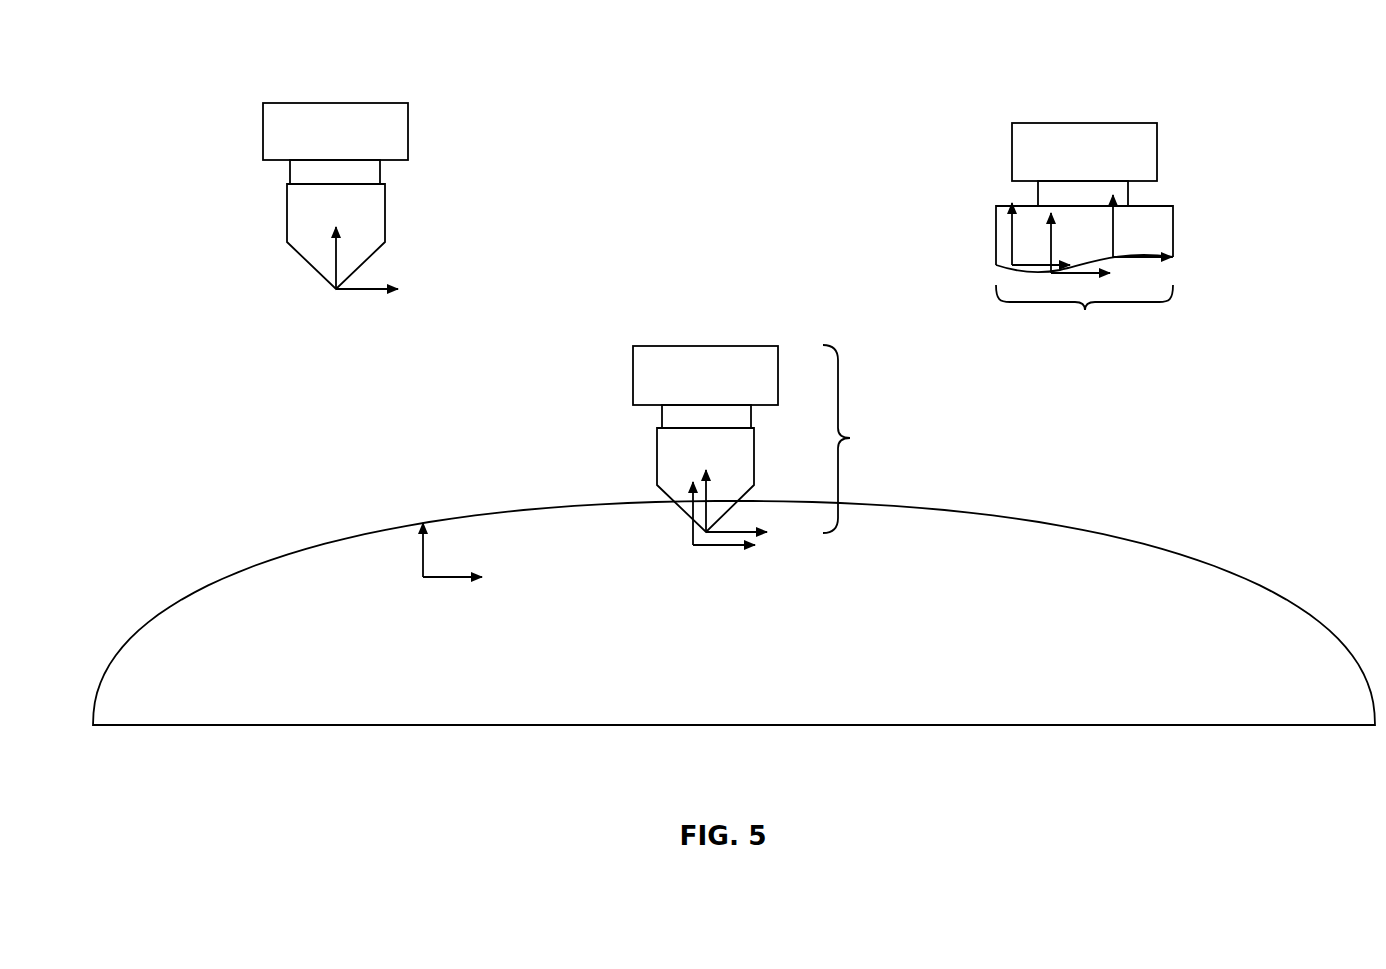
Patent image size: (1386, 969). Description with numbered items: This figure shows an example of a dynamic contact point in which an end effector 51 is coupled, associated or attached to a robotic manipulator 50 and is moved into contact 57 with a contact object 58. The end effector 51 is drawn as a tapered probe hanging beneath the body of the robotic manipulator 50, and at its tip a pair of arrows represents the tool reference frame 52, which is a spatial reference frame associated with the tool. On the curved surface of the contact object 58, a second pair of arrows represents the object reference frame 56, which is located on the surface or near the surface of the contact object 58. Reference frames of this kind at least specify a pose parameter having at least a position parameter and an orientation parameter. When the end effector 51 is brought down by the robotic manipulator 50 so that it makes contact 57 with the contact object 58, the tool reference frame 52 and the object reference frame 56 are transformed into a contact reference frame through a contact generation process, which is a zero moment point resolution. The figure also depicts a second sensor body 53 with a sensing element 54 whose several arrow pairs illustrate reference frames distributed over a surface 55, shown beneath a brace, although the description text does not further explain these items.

The robotic manipulator 50 is at (408, 143).
The end effector 51 is at (287, 212).
The tool reference frame 52 is at (367, 292).
The sensor body 53 is at (1157, 153).
The sensing element with surface normals 54 is at (996, 237).
The surface 55 is at (1084, 333).
The object reference frame 56 is at (452, 579).
The contact 57 is at (800, 439).
The contact object 58 is at (273, 563).